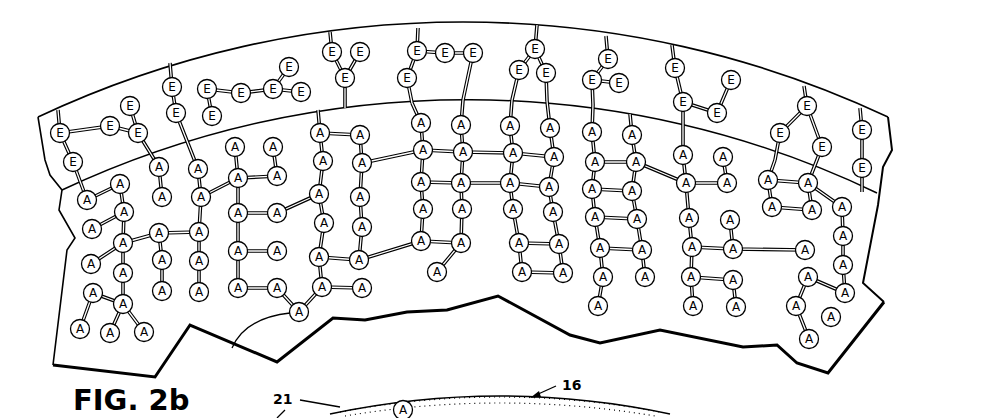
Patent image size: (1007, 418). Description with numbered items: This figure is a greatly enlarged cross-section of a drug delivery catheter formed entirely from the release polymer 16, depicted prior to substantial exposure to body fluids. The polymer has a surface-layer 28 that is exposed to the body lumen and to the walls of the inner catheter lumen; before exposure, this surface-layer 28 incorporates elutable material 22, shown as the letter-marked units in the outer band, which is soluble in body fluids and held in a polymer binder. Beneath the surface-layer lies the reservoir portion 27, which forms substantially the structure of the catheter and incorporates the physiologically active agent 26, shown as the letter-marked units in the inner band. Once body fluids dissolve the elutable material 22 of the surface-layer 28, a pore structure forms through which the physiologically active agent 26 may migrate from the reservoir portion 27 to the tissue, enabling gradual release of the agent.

The polymer release coating 16 is at (564, 17).
The elutable material 22 is at (283, 61).
The physiologically active agent 26 is at (201, 302).
The reservoir portion 27 is at (57, 258).
The surface-layer 28 is at (48, 182).